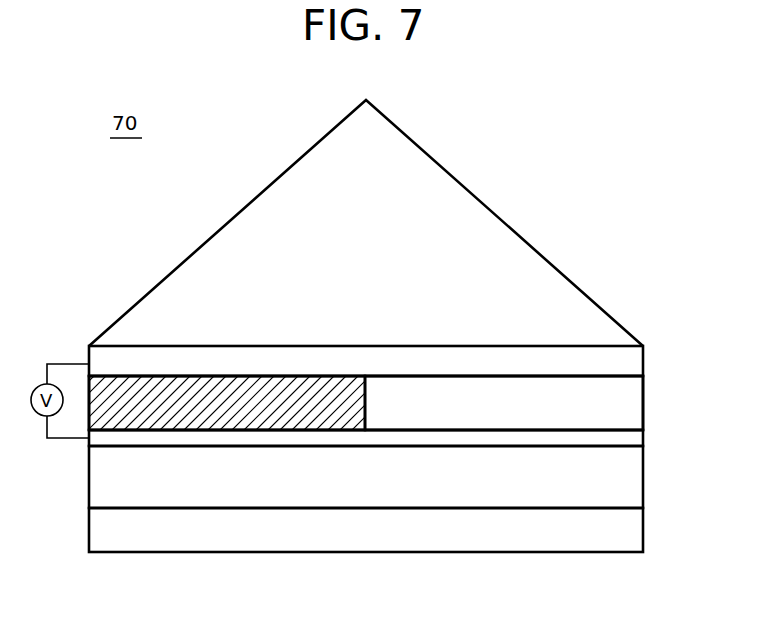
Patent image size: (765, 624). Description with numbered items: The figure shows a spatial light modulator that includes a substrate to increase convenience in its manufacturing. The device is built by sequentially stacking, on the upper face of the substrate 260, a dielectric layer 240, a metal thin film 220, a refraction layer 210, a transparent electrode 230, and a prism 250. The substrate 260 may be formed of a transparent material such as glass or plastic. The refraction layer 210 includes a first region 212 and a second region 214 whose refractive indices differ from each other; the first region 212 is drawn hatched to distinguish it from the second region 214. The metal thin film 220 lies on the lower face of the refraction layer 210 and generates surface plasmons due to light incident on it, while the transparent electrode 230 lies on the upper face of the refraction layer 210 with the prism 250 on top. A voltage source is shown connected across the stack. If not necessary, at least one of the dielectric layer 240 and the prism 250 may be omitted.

The prism 250 is at (588, 314).
The transparent electrode 230 is at (639, 368).
The refraction layer 210 is at (371, 490).
The first region 212 is at (235, 416).
The second region 214 is at (512, 415).
The metal thin film 220 is at (639, 440).
The dielectric layer 240 is at (639, 489).
The substrate 260 is at (639, 532).